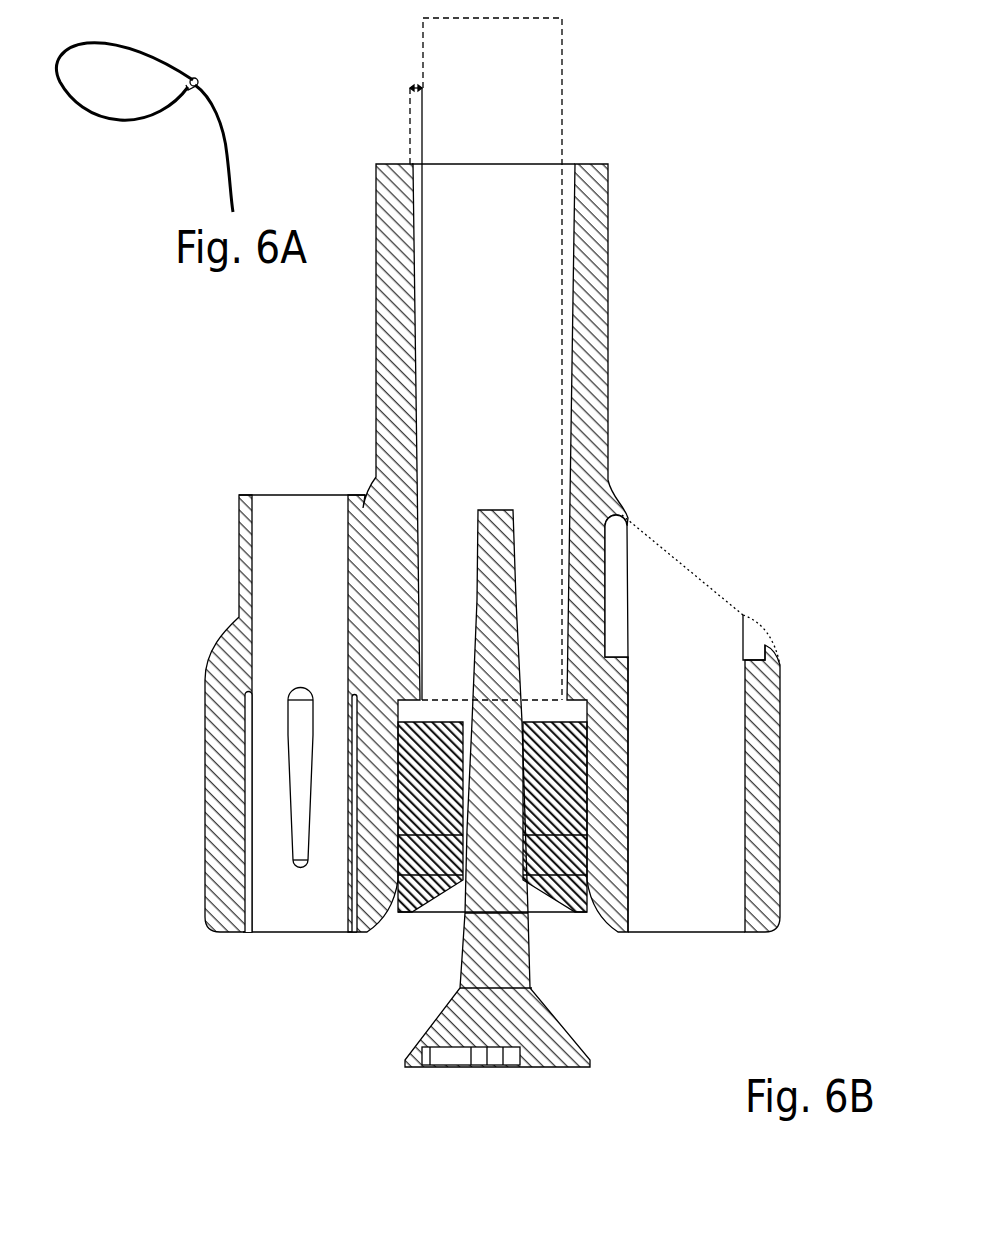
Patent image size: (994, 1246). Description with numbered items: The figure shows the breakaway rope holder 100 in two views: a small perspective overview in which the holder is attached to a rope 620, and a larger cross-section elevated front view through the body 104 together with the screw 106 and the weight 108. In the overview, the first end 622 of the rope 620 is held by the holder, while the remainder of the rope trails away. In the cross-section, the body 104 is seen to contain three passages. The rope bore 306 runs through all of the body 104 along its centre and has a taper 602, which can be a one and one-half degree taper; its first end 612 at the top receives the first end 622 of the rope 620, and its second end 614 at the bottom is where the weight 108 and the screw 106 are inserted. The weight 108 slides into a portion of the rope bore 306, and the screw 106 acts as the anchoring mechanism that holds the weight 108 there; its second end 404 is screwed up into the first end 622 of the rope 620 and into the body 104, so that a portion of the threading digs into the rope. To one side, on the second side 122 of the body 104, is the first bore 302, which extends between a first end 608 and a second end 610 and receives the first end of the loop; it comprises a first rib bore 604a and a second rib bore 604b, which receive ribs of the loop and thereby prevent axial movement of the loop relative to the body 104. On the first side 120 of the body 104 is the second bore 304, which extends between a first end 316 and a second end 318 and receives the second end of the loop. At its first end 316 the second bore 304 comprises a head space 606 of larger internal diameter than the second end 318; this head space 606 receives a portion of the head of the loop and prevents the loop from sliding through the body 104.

In FIG. 6A, the rope 620 is at (139, 52).
In FIG. 6B, the rope 620 is at (562, 45).
In FIG. 6A, the breakaway rope holder 100 is at (197, 76).
In FIG. 6A, the first end of rope 622 is at (181, 93).
In FIG. 6B, the taper 602 is at (416, 75).
In FIG. 6B, the first end of rope bore 612 is at (513, 187).
In FIG. 6B, the rope bore 306 is at (518, 355).
In FIG. 6B, the body 104 is at (600, 415).
In FIG. 6B, the second end of screw 404 is at (490, 528).
In FIG. 6B, the head space 606 is at (618, 557).
In FIG. 6B, the first end of second bore 316 is at (692, 585).
In FIG. 6B, the first side of body 120 is at (769, 681).
In FIG. 6B, the second end of rope bore 614 is at (548, 703).
In FIG. 6B, the second bore 304 is at (692, 837).
In FIG. 6B, the second end of second bore 318 is at (692, 903).
In FIG. 6B, the weight 108 is at (561, 915).
In FIG. 6B, the screw 106 is at (560, 1055).
In FIG. 6B, the first bore 302 is at (280, 658).
In FIG. 6B, the first end of first bore 608 is at (285, 517).
In FIG. 6B, the second side of body 122 is at (203, 689).
In FIG. 6B, the second rib bore 604b is at (243, 783).
In FIG. 6B, the first rib bore 604a is at (306, 925).
In FIG. 6B, the second end of first bore 610 is at (293, 862).